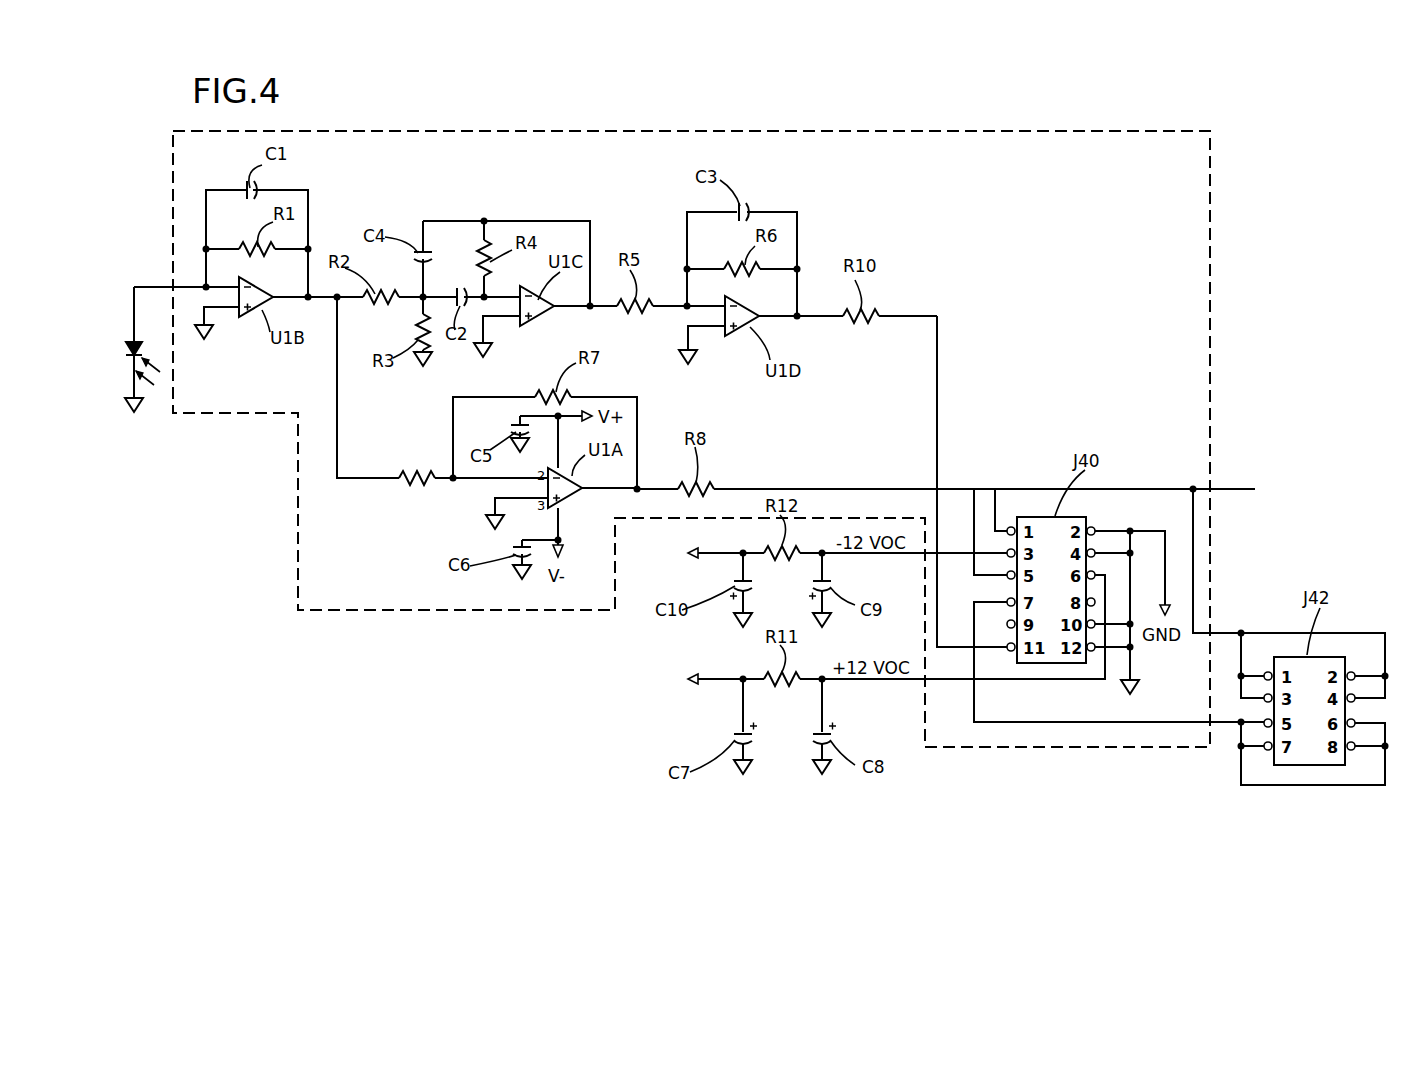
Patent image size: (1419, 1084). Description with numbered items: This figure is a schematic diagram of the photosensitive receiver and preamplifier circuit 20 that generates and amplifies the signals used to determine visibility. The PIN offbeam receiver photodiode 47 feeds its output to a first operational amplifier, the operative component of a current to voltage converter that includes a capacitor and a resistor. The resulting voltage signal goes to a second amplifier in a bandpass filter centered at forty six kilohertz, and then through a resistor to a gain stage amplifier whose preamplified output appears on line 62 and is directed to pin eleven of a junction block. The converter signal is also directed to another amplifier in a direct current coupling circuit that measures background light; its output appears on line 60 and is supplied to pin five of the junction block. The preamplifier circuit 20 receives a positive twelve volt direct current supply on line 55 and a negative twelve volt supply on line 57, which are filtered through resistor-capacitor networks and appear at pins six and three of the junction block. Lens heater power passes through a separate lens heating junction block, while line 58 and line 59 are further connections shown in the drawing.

The preamplifier circuit 20 is at (1209, 388).
The PIN offbeam receiver photodiode 47 is at (140, 345).
The line 55 is at (712, 683).
The line 57 is at (718, 552).
The output signal line 58 is at (1222, 496).
The ground line 59 is at (1095, 724).
The line 60 is at (977, 504).
The line 62 is at (939, 423).